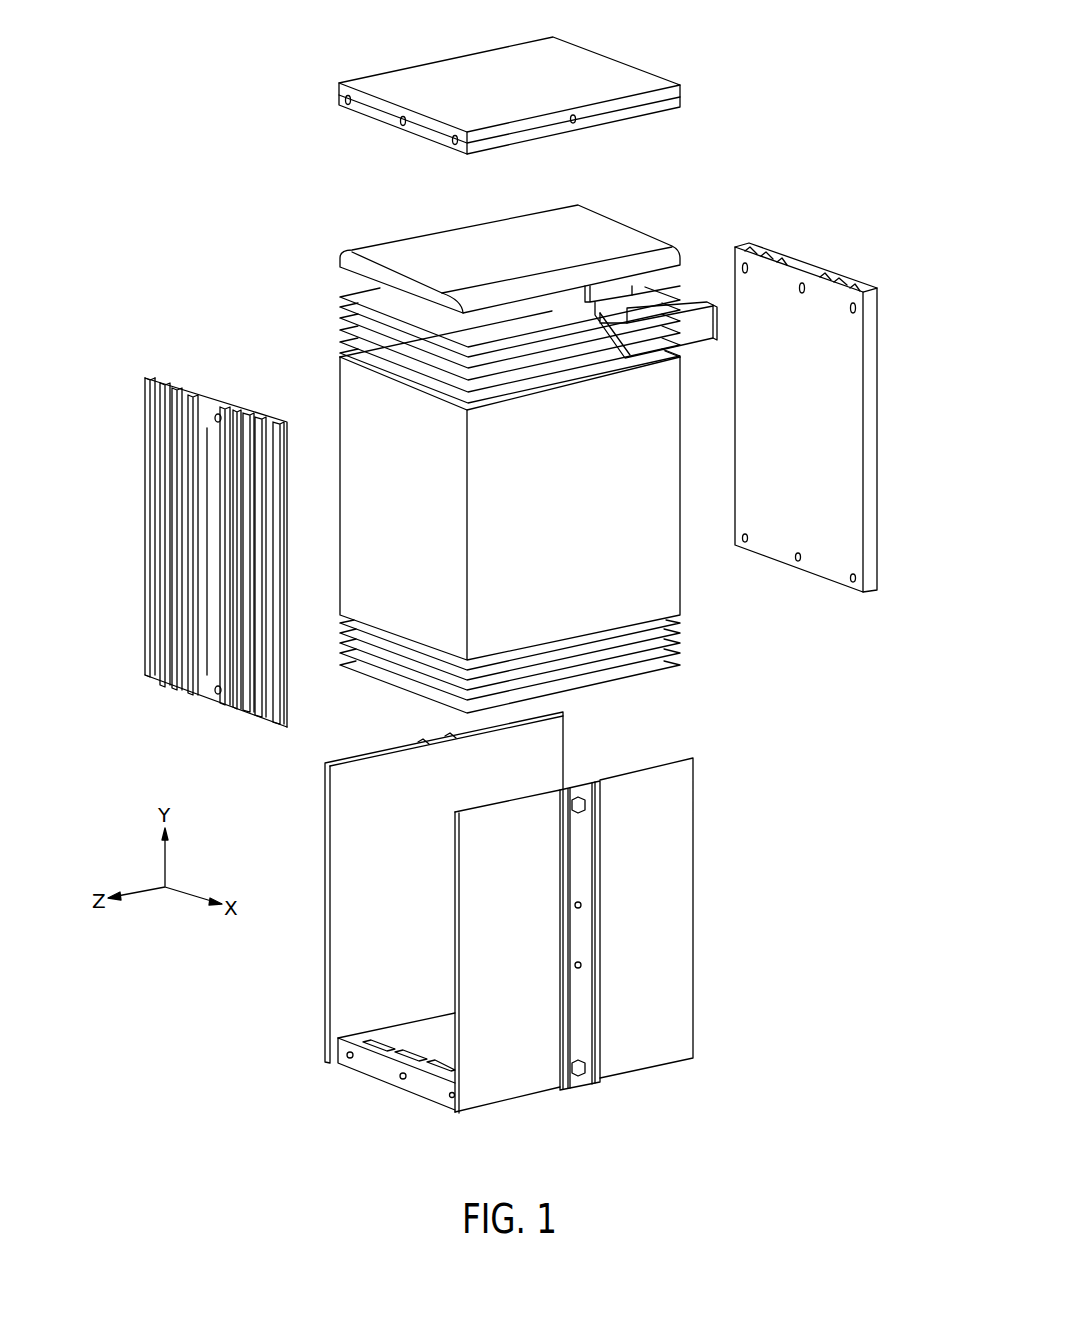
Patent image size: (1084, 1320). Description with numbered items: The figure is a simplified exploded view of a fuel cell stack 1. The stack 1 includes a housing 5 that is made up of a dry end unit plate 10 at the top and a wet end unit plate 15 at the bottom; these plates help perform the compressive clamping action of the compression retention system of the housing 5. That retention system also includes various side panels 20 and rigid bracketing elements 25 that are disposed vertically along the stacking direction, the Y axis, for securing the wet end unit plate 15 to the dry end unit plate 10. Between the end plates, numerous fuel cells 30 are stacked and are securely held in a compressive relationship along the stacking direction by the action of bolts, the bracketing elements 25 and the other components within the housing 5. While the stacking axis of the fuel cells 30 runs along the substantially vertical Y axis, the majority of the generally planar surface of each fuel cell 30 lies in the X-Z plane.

The fuel cell stack 1 is at (217, 145).
The housing 5 is at (857, 718).
The dry end unit plate 10 is at (477, 63).
The wet end unit plate 15 is at (373, 1067).
The side panels 20 is at (848, 438).
The bracketing elements 25 is at (602, 982).
The fuel cells 30 is at (673, 642).